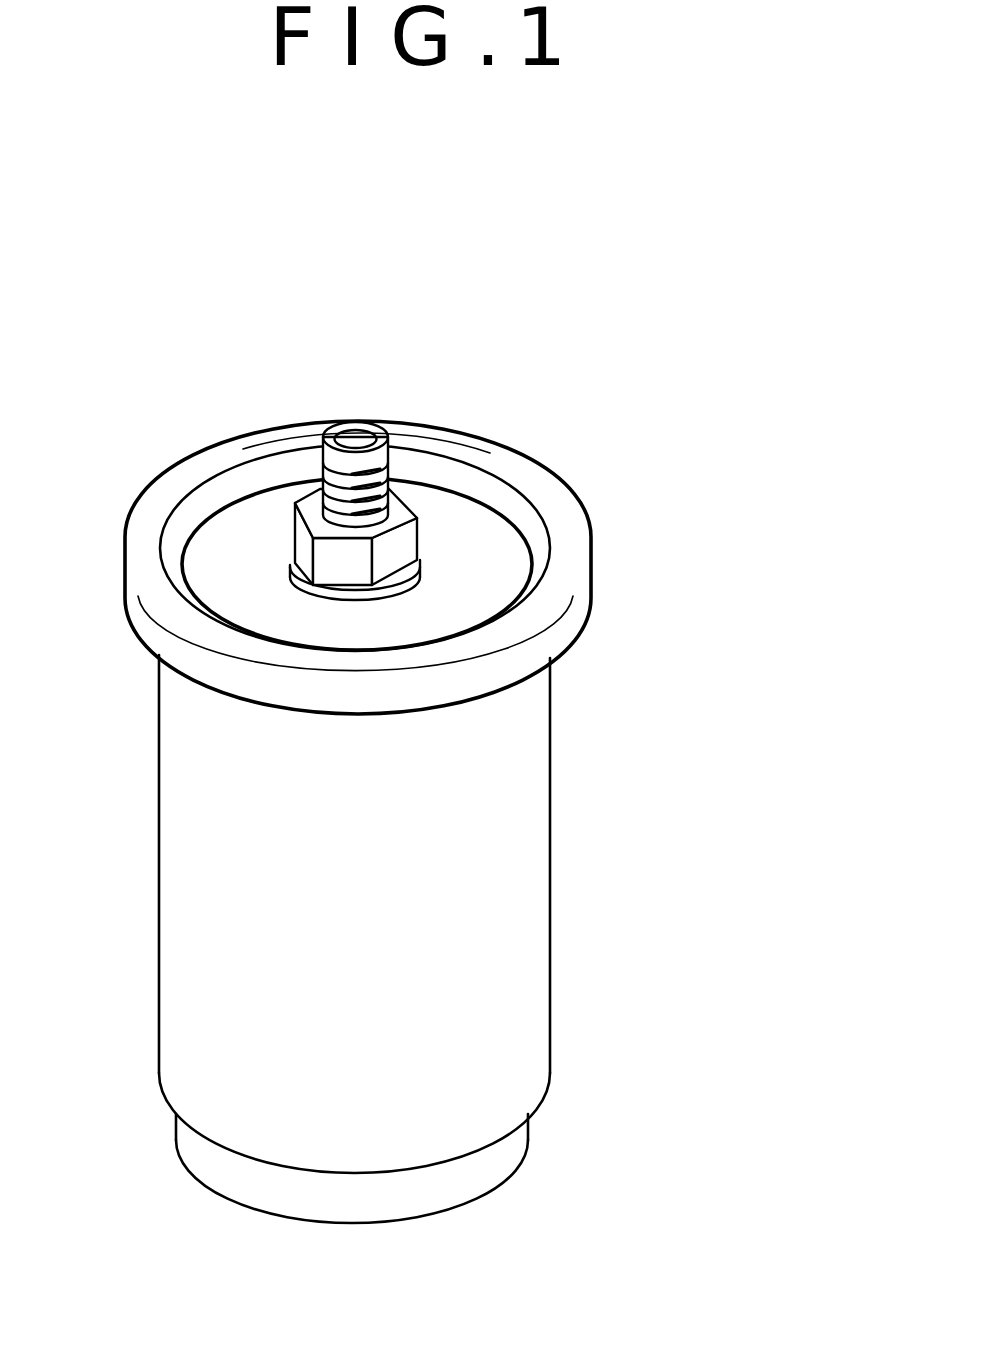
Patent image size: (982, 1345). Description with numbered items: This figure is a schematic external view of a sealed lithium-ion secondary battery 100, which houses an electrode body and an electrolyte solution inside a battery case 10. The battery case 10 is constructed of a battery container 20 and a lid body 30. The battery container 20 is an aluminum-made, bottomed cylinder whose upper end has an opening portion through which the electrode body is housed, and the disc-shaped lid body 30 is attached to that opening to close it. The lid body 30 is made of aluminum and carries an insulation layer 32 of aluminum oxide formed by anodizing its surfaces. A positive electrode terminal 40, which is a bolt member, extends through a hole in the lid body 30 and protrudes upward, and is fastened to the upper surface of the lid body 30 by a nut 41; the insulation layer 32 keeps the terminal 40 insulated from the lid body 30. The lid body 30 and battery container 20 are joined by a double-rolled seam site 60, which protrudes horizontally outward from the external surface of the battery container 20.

The lithium-ion secondary battery 100 is at (583, 345).
The battery case 10 is at (355, 850).
The battery container 20 is at (503, 873).
The lid body 30 is at (485, 552).
The insulation layer 32 is at (442, 530).
The positive electrode terminal 40 is at (360, 425).
The nut 41 is at (313, 505).
The double-rolled seam site 60 is at (167, 472).